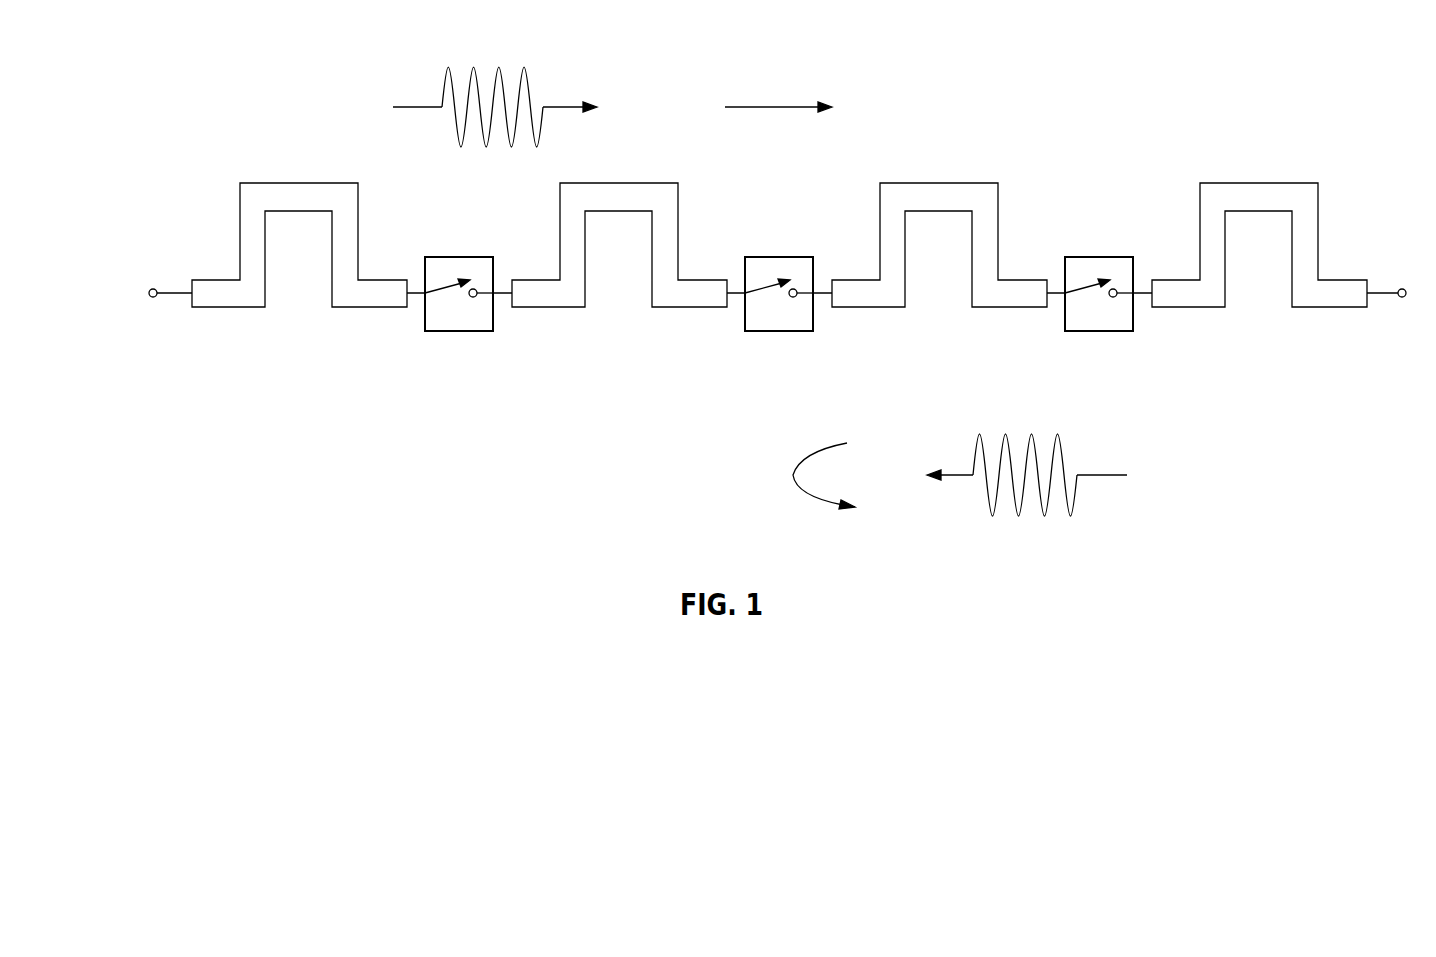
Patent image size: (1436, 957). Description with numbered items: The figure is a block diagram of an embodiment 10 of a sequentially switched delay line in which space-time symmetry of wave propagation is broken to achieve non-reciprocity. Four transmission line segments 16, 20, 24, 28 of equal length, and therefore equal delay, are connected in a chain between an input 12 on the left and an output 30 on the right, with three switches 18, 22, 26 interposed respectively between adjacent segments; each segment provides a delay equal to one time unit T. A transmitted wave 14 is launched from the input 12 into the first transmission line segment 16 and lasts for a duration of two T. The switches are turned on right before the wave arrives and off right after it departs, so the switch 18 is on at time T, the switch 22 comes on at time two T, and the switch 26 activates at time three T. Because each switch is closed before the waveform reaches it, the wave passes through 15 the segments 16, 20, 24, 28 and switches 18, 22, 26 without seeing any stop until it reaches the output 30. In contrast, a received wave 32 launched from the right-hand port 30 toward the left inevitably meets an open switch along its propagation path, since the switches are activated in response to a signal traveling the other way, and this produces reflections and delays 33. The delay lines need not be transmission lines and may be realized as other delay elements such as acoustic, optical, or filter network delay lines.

The embodiment 10 is at (242, 42).
The input 12 is at (180, 297).
The transmitted wave 14 is at (473, 67).
The passing through 15 is at (763, 107).
The first transmission line segment 16 is at (322, 183).
The switch 18 is at (425, 310).
The transmission line segment 20 is at (622, 183).
The switch 22 is at (745, 312).
The transmission line segment 24 is at (947, 183).
The switch 26 is at (1065, 312).
The transmission line segment 28 is at (1237, 183).
The output 30 is at (1383, 297).
The received wave 32 is at (1062, 447).
The reflections and delays 33 is at (800, 463).